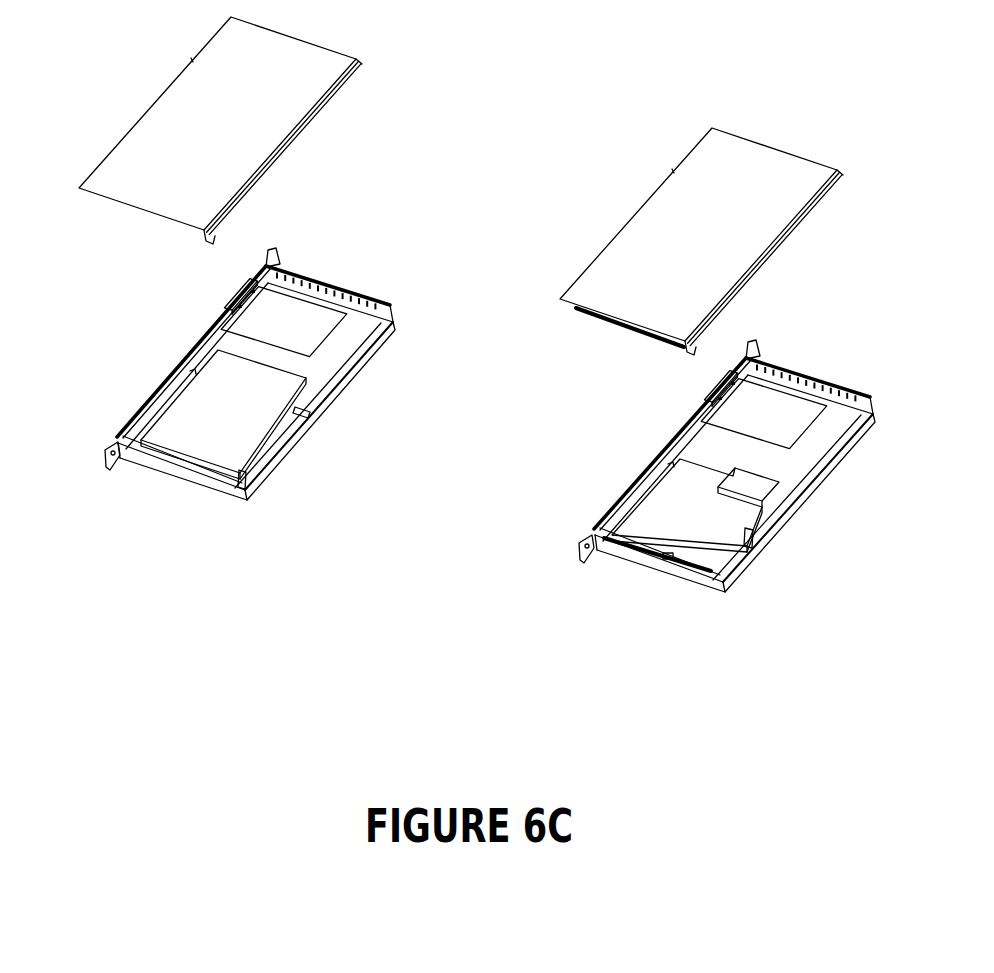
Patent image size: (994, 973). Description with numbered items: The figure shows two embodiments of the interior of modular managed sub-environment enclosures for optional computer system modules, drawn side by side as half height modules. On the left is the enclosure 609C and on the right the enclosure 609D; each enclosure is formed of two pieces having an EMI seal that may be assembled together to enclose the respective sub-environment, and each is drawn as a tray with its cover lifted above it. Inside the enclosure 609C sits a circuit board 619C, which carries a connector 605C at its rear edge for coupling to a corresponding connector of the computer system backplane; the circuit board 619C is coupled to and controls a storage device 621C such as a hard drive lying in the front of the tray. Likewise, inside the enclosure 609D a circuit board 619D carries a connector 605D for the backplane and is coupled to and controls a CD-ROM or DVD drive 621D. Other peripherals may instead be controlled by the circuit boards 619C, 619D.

The connector 605C is at (237, 300).
The enclosure 609C is at (108, 467).
The circuit board 619C is at (309, 356).
The storage device 621C is at (248, 446).
The connector 605D is at (680, 383).
The enclosure 609D is at (548, 565).
The circuit board 619D is at (802, 432).
The CD-ROM or DVD drive 621D is at (720, 523).